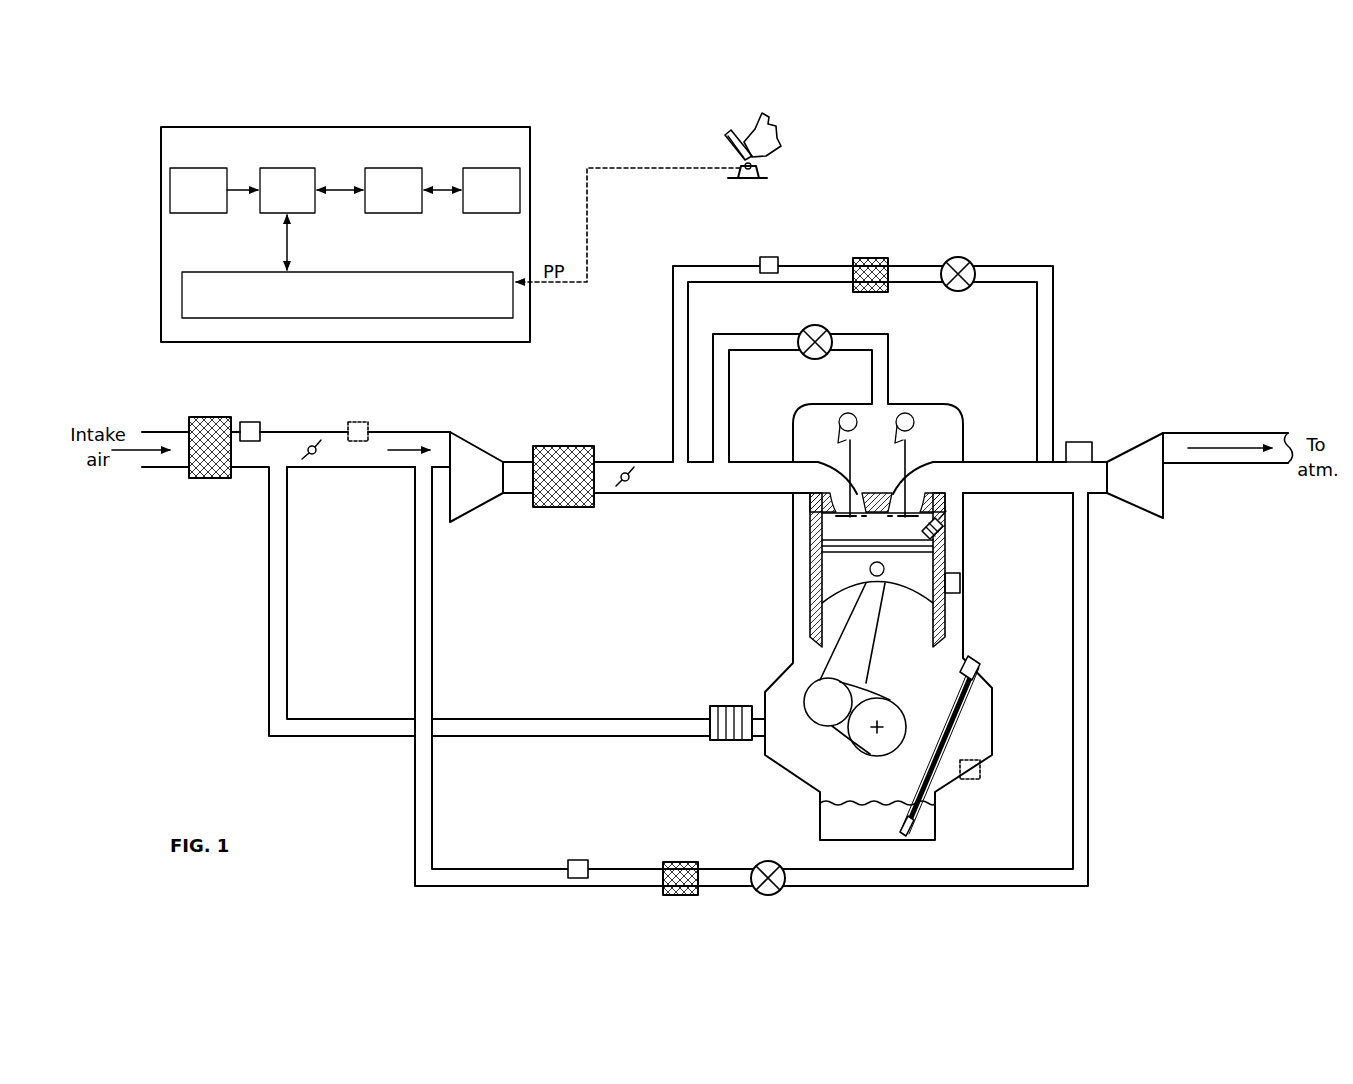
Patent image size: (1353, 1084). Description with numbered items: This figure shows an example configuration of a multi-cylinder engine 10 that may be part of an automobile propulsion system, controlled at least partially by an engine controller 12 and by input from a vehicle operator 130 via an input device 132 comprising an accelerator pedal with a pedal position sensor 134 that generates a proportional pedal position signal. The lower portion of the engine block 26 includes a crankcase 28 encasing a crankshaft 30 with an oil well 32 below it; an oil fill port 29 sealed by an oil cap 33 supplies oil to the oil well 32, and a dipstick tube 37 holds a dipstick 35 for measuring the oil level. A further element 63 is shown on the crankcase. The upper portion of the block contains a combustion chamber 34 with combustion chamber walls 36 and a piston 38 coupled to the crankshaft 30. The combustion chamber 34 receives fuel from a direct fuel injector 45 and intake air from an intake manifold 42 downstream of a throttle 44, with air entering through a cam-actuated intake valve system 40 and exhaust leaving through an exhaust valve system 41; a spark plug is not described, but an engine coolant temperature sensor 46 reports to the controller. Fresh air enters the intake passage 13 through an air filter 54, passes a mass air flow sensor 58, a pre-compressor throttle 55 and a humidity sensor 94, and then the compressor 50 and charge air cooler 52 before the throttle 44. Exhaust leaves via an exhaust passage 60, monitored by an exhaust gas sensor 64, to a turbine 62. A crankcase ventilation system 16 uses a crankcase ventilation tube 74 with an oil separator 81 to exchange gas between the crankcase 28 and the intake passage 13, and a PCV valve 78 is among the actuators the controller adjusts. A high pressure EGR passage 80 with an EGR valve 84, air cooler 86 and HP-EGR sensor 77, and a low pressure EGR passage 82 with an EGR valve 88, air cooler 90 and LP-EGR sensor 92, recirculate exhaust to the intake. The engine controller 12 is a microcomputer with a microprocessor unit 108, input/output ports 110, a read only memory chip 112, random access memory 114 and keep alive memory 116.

The engine 10 is at (1276, 125).
The engine controller 12 is at (508, 127).
The intake passage 13 is at (352, 470).
The crankcase ventilation system 16 is at (544, 704).
The engine block 26 is at (996, 808).
The crankcase 28 is at (992, 755).
The oil fill port 29 is at (966, 663).
The crankshaft 30 is at (830, 705).
The oil well 32 is at (876, 820).
The oil cap 33 is at (978, 662).
The combustion chamber 34 is at (812, 526).
The dipstick 35 is at (982, 676).
The combustion chamber walls 36 is at (943, 553).
The dipstick tube 37 is at (962, 718).
The piston 38 is at (828, 570).
The intake valve system 40 is at (852, 462).
The exhaust valve system 41 is at (906, 462).
The intake manifold 42 is at (745, 462).
The throttle 44 is at (628, 482).
The fuel injector 45 is at (946, 516).
The engine coolant temperature sensor 46 is at (953, 583).
The compressor 50 is at (476, 477).
The charge air cooler 52 is at (560, 446).
The air filter 54 is at (210, 417).
The pre-compressor throttle 55 is at (318, 456).
The mass air flow sensor 58 is at (250, 422).
The exhaust passage 60 is at (995, 462).
The turbine 62 is at (1135, 475).
The oil separator 63 is at (972, 782).
The exhaust gas sensor 64 is at (1092, 452).
The crankcase ventilation tube 74 is at (590, 737).
The HP-EGR sensor 77 is at (770, 257).
The PCV valve 78 is at (830, 330).
The HP-EGR passage 80 is at (1018, 330).
The oil separator 81 is at (725, 706).
The LP-EGR passage 82 is at (1100, 828).
The EGR valve 84 is at (965, 257).
The air cooler 86 is at (873, 258).
The EGR valve 88 is at (764, 861).
The air cooler 90 is at (681, 862).
The LP-EGR sensor 92 is at (580, 860).
The humidity sensor 94 is at (358, 422).
The microprocessor unit 108 is at (293, 168).
The input/output ports 110 is at (190, 272).
The read only memory chip 112 is at (205, 168).
The random access memory 114 is at (392, 168).
The keep alive memory 116 is at (487, 168).
The vehicle operator 130 is at (778, 136).
The input device 132 is at (738, 146).
The pedal position sensor 134 is at (762, 167).